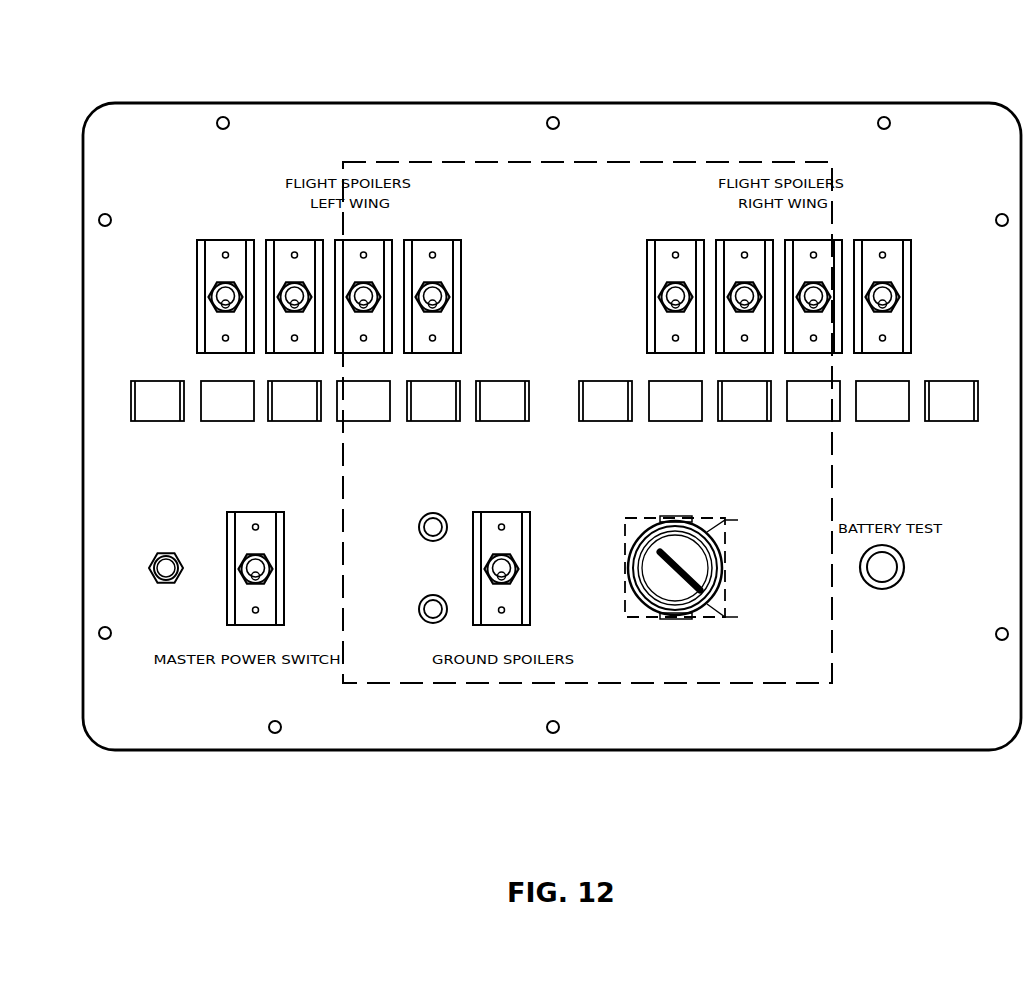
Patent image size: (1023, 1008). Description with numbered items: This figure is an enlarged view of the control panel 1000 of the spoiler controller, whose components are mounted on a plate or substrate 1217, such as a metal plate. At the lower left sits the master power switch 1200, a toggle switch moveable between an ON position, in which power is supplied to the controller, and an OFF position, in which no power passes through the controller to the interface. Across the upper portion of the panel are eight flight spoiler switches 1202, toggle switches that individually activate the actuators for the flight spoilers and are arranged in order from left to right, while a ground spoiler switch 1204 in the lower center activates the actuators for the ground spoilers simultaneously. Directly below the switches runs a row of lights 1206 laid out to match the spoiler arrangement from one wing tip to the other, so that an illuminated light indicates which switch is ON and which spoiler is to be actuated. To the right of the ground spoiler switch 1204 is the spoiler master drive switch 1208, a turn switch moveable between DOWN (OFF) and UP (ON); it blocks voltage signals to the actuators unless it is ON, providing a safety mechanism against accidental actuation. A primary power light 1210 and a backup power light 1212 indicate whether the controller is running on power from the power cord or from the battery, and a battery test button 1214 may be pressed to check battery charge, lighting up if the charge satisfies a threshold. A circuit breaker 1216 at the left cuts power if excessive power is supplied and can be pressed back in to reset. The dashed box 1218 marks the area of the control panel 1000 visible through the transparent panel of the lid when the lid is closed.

The control panel 1000 is at (104, 47).
The plate or substrate 1217 is at (102, 135).
The dashed box 1218 is at (440, 160).
The flight spoiler switches 1202 is at (556, 280).
The lights 1206 is at (160, 381).
The circuit breaker 1216 is at (162, 552).
The master power switch 1200 is at (240, 518).
The primary power light 1210 is at (428, 514).
The backup power light 1212 is at (428, 597).
The ground spoiler switch 1204 is at (488, 518).
The spoiler master drive switch 1208 is at (640, 532).
The battery test button 1214 is at (903, 567).